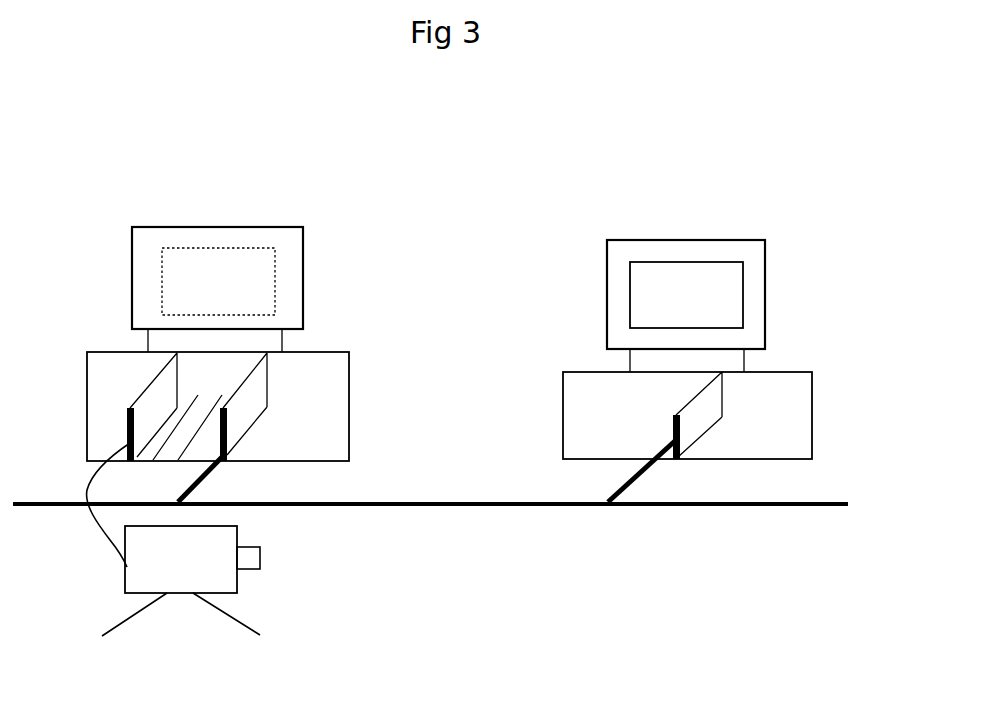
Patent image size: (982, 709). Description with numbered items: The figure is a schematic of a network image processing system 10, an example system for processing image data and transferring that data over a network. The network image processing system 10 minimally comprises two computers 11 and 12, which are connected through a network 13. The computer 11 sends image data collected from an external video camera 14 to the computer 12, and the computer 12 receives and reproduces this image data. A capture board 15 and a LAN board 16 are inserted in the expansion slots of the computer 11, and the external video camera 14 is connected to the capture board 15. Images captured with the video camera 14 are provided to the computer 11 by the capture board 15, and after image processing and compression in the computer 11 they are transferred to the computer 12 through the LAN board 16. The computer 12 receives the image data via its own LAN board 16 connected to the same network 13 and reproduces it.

The network image processing system 10 is at (498, 187).
The computer 11 is at (290, 278).
The computer 12 is at (759, 306).
The network 13 is at (527, 504).
The external video camera 14 is at (207, 576).
The capture board 15 is at (155, 395).
The LAN board 16 is at (247, 395).